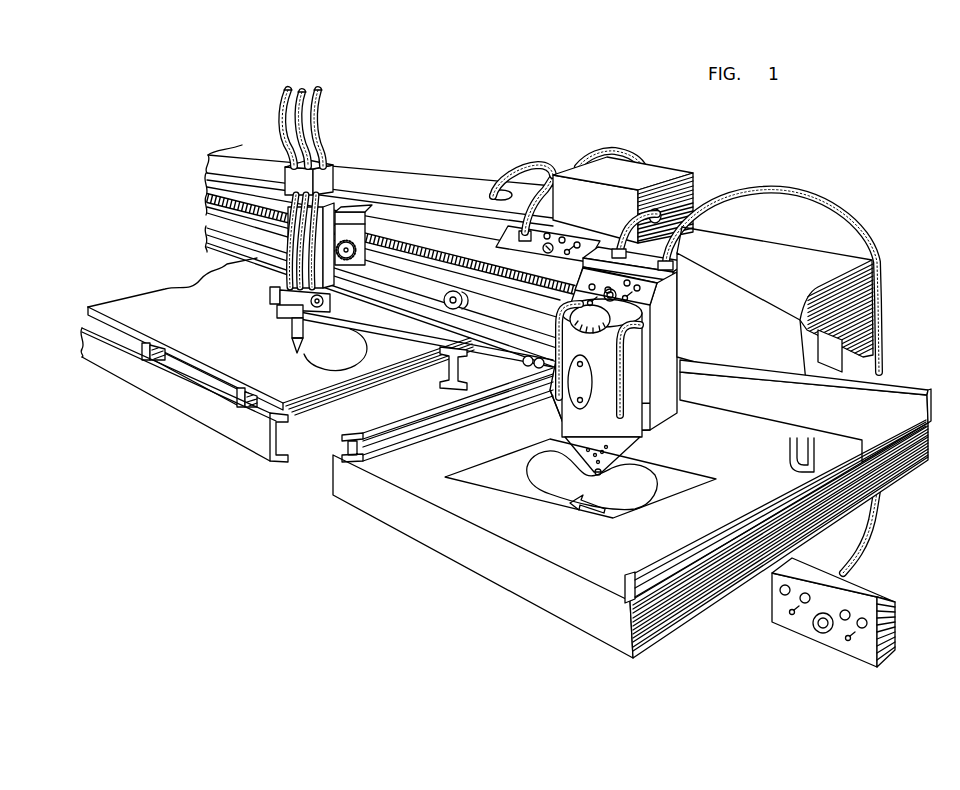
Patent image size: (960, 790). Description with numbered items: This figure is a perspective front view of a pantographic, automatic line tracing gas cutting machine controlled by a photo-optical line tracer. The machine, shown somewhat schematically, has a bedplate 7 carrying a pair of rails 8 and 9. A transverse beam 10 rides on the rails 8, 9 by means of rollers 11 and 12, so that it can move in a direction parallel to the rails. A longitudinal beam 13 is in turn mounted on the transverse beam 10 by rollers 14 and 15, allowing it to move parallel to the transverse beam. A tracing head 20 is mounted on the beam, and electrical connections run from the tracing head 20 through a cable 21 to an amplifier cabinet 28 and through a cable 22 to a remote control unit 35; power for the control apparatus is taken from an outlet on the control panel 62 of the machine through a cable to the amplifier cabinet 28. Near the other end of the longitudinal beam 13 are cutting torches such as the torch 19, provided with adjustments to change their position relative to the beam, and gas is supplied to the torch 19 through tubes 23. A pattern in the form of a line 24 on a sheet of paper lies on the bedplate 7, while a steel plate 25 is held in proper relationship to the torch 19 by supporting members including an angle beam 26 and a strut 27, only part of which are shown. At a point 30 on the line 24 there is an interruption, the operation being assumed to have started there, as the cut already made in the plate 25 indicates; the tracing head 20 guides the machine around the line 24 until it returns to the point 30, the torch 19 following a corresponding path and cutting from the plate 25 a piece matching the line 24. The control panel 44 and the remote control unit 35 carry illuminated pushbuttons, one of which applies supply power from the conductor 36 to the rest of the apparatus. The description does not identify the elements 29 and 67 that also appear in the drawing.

The bedplate 7 is at (472, 557).
The rail 8 is at (625, 585).
The rail 9 is at (365, 458).
The transverse beam 10 is at (907, 387).
The roller 11 is at (790, 456).
The roller 12 is at (520, 359).
The longitudinal beam 13 is at (873, 283).
The roller 14 is at (748, 402).
The roller 15 is at (455, 310).
The cutting torch 19 is at (270, 300).
The tracing head 20 is at (673, 384).
The cable 21 is at (622, 228).
The cable 22 is at (790, 197).
The tubes 23 is at (317, 90).
The line 24 is at (533, 473).
The steel plate 25 is at (293, 387).
The angle beam 26 is at (263, 448).
The strut 27 is at (142, 352).
The amplifier cabinet 28 is at (660, 172).
The cable 29 is at (522, 165).
The point 30 is at (637, 476).
The remote control unit 35 is at (867, 597).
The conductor 36 is at (549, 184).
The control panel 44 is at (650, 298).
The control panel 62 is at (508, 239).
The hoses 67 is at (556, 304).